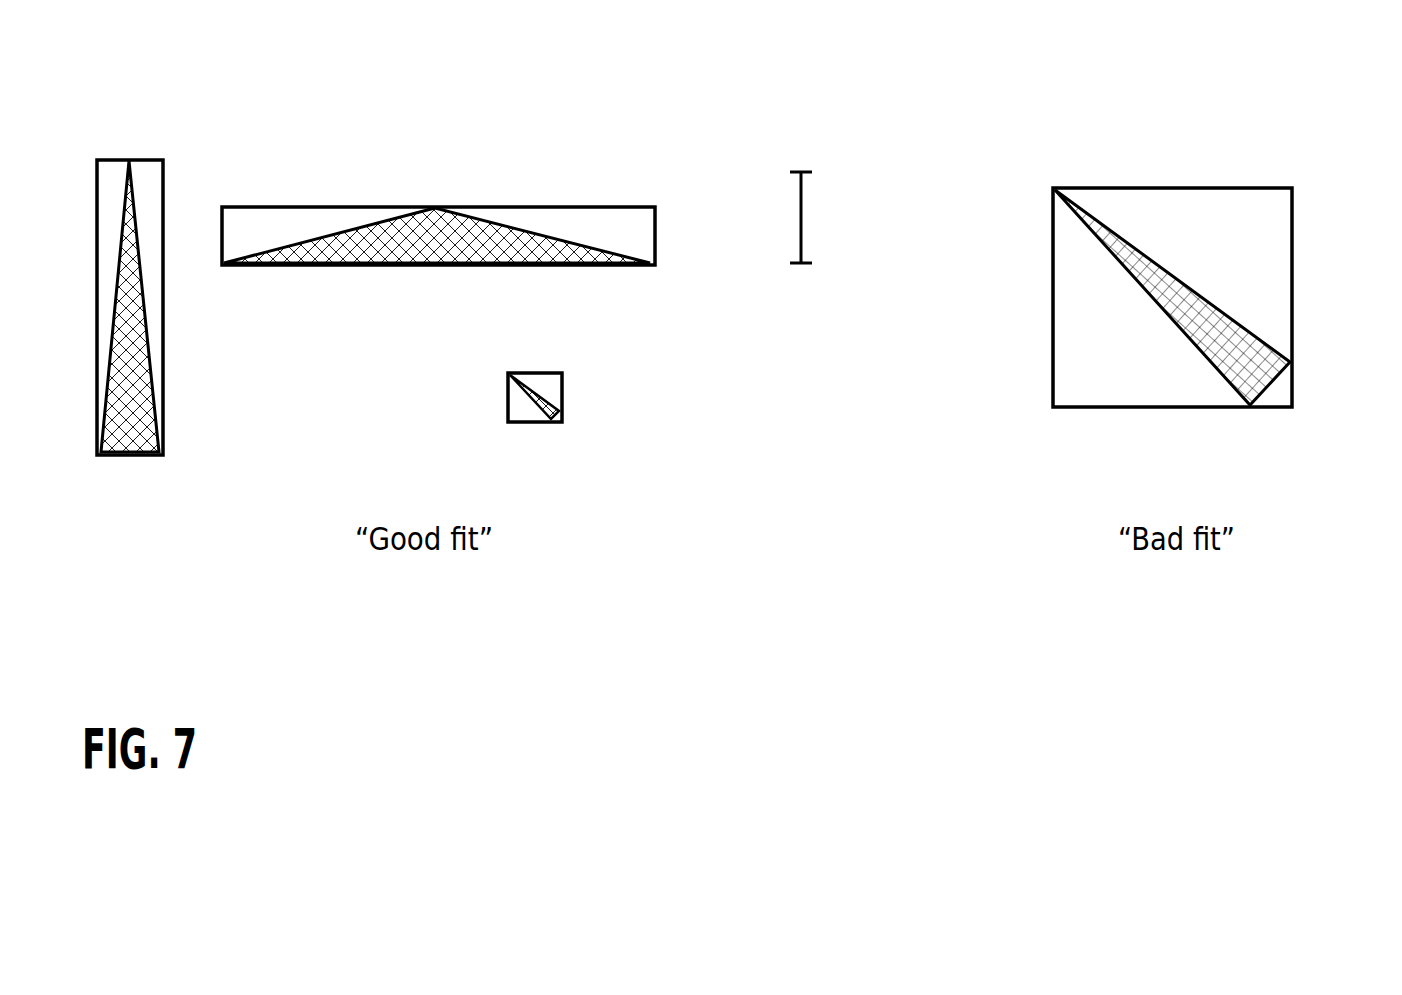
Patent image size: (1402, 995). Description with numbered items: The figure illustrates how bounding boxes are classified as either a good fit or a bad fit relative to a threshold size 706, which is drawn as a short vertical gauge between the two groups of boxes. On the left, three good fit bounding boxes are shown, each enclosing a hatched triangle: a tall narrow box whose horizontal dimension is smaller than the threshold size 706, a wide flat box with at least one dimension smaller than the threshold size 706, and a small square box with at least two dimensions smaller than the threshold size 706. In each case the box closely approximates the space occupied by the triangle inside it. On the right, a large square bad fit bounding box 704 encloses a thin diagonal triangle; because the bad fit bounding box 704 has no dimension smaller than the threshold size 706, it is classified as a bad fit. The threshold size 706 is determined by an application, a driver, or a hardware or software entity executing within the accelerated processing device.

The bad fit bounding box 704 is at (1120, 187).
The threshold size 706 is at (803, 217).